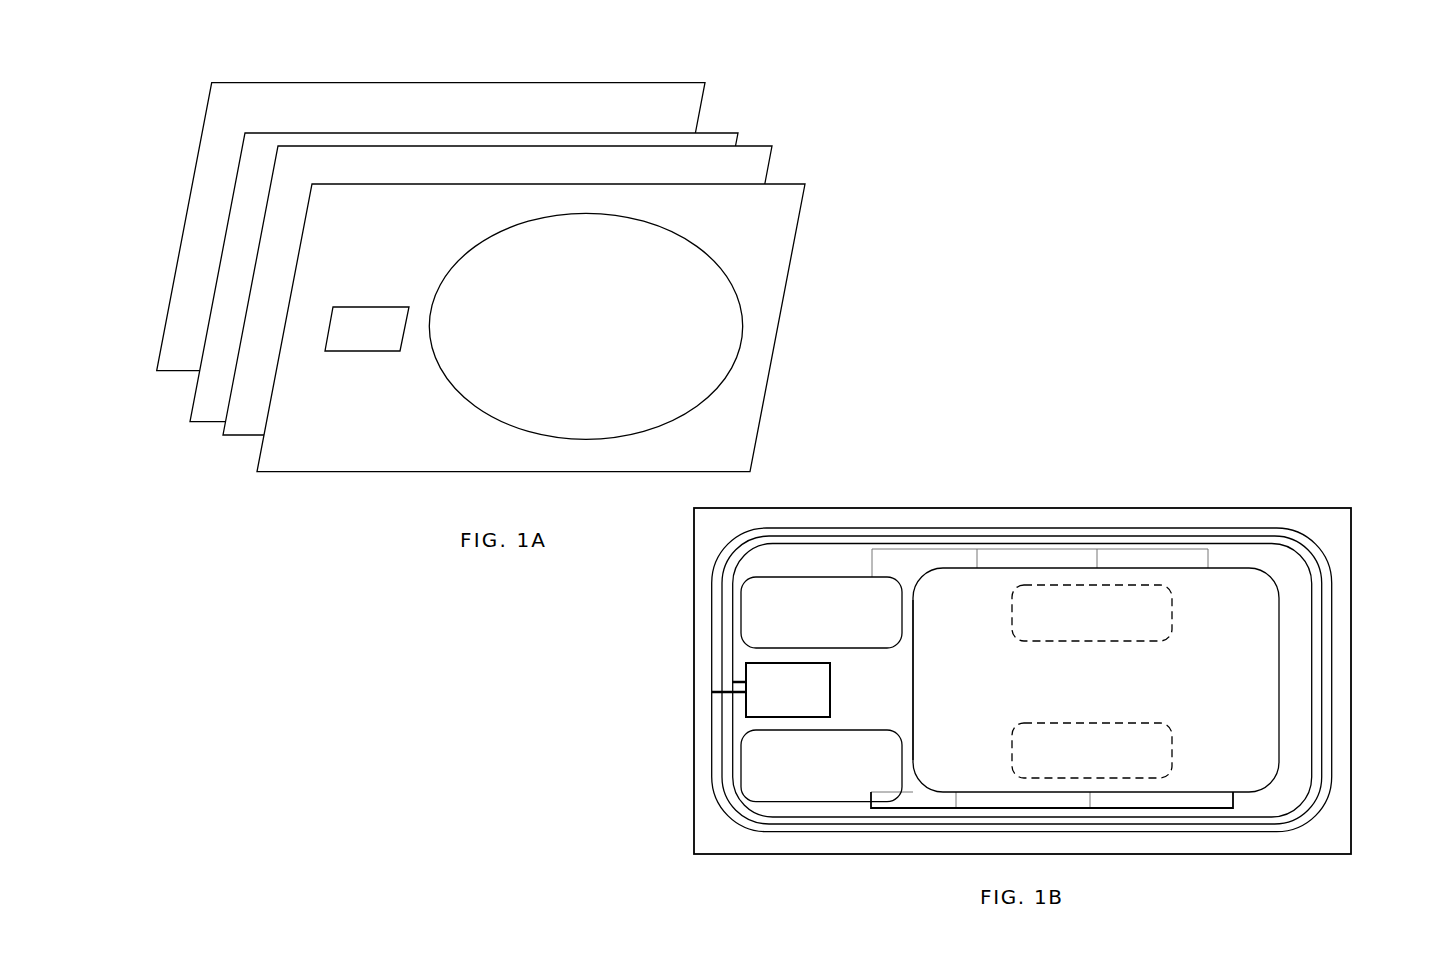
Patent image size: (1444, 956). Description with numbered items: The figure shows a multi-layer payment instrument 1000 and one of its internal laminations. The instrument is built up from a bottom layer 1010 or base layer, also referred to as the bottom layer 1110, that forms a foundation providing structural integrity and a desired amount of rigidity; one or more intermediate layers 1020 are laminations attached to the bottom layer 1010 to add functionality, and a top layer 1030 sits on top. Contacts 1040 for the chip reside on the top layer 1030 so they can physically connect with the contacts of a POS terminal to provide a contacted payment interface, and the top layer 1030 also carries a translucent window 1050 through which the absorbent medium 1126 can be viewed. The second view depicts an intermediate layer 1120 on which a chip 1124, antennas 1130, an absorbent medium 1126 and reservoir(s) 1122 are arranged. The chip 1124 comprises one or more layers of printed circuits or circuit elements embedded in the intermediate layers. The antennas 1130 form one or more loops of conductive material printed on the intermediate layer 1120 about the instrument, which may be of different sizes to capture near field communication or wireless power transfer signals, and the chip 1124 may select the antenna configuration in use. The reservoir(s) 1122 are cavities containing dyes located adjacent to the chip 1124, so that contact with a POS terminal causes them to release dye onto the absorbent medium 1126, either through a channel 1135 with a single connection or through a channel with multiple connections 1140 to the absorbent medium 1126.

In FIG. 1A, the multi-layer payment instrument 1000 is at (902, 77).
In FIG. 1A, the bottom layer 1010 is at (674, 108).
In FIG. 1A, the intermediate layers 1020 is at (707, 138).
In FIG. 1A, the top layer 1030 is at (787, 207).
In FIG. 1A, the contacts 1040 is at (364, 327).
In FIG. 1A, the translucent window 1050 is at (733, 367).
In FIG. 1B, the bottom layer 1110 is at (1263, 417).
In FIG. 1B, the intermediate layer 1120 is at (1330, 528).
In FIG. 1B, the antennas 1130 is at (730, 811).
In FIG. 1B, the reservoir(s) 1122 is at (841, 636).
In FIG. 1B, the chip 1124 is at (808, 711).
In FIG. 1B, the absorbent medium 1126 is at (1116, 703).
In FIG. 1B, the channel 1135 is at (914, 763).
In FIG. 1B, the multiple connections 1140 is at (872, 560).